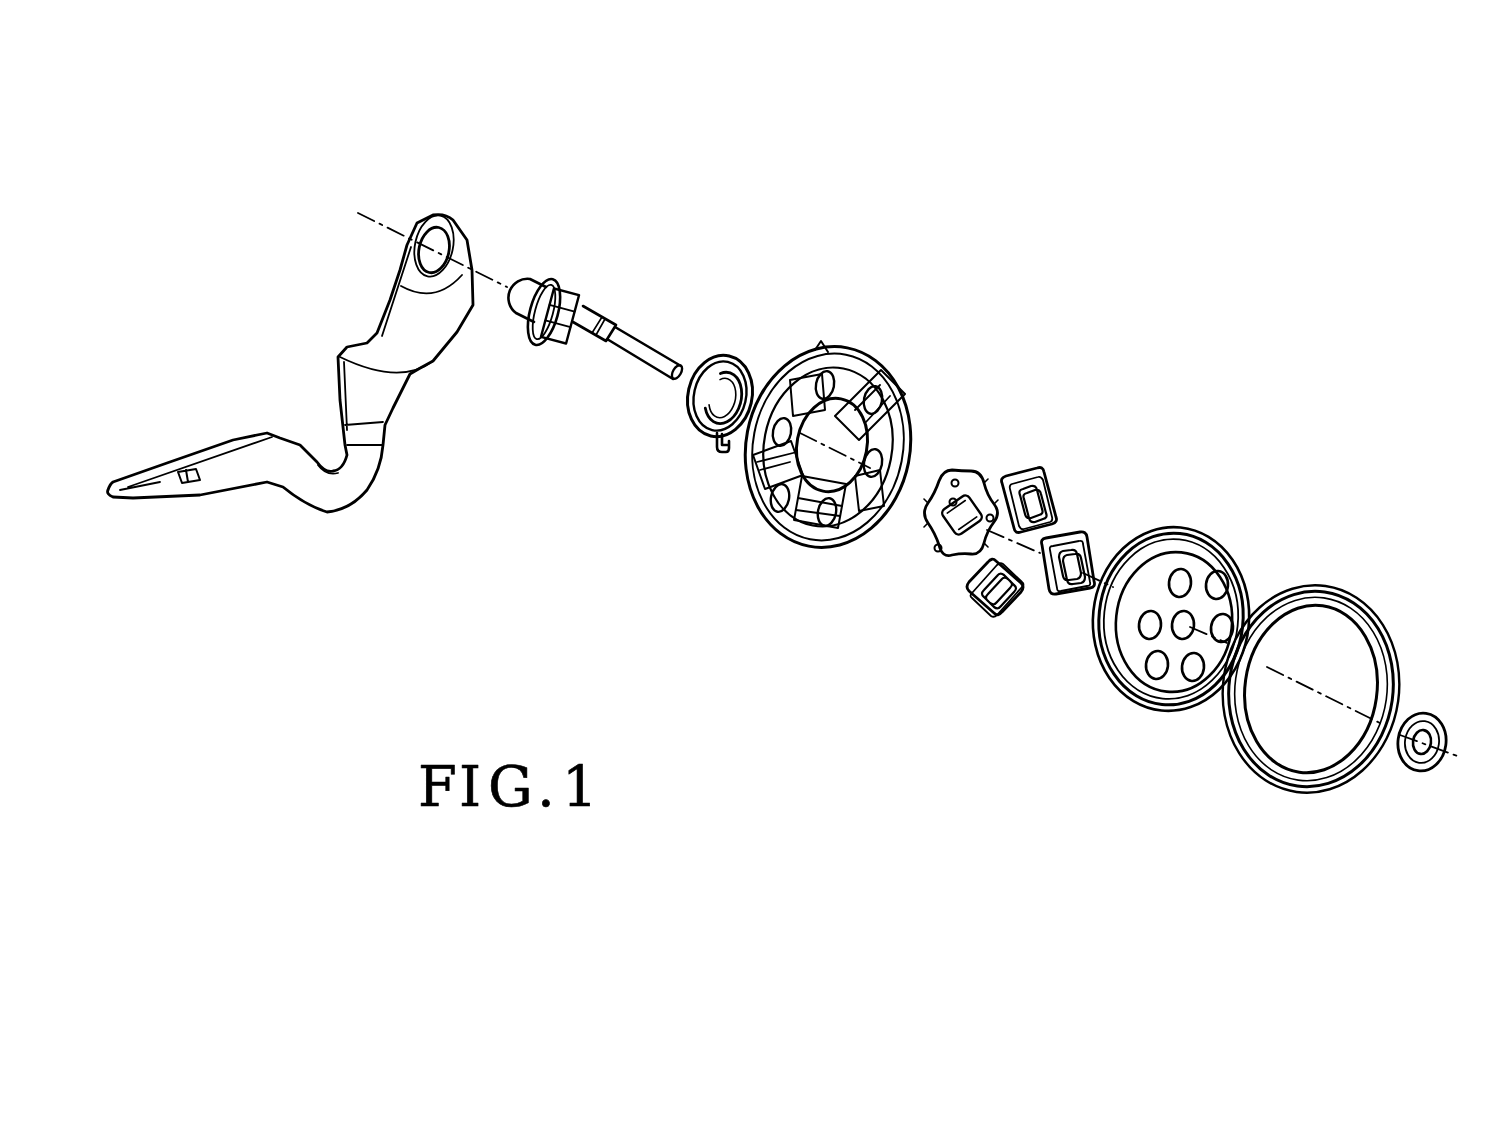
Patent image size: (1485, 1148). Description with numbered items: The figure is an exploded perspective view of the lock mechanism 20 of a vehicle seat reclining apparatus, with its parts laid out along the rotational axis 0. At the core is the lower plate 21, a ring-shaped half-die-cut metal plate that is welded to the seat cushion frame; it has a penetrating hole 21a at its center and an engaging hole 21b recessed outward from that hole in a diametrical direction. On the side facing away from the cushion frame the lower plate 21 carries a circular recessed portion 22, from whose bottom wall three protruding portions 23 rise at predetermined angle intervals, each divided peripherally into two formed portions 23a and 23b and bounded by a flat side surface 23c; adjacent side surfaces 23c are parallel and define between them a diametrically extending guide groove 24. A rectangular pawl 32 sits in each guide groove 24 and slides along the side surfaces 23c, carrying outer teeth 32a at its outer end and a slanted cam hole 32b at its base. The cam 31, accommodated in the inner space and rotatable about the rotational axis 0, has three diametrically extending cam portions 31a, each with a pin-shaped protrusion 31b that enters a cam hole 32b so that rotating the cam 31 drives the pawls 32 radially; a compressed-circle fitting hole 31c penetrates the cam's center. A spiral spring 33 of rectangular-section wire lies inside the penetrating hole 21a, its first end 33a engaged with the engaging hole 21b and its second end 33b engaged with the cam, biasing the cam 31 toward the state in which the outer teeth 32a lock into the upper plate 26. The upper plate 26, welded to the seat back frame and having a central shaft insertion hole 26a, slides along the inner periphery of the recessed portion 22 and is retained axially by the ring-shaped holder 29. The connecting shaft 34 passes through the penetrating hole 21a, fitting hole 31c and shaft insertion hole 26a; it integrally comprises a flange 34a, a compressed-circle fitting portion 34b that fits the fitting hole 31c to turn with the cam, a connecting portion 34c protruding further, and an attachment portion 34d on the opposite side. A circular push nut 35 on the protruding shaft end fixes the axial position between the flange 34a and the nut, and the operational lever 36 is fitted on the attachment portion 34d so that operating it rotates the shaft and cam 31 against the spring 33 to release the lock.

The rotational axis 0 is at (484, 266).
The lock mechanism 20 is at (1066, 311).
The lower plate 21 is at (826, 456).
The penetrating hole 21a is at (760, 522).
The engaging hole 21b is at (862, 520).
The recessed portion 22 is at (870, 445).
The protruding portions 23 is at (826, 467).
The formed portion 23a is at (772, 494).
The formed portion 23b is at (760, 467).
The side surface 23c is at (824, 370).
The guide groove 24 is at (800, 400).
The upper plate 26 is at (1171, 614).
The shaft insertion hole 26a is at (1176, 640).
The holder 29 is at (1342, 590).
The cam 31 is at (956, 539).
The cam portions 31a is at (960, 478).
The protrusion 31b is at (941, 482).
The fitting hole 31c is at (987, 485).
The pawl 32 is at (1057, 563).
The outer teeth 32a is at (1037, 488).
The cam hole 32b is at (1010, 592).
The spring 33 is at (696, 391).
The first end 33a is at (714, 445).
The second end 33b is at (718, 372).
The connecting shaft 34 is at (582, 322).
The flange 34a is at (566, 292).
The fitting portion 34b is at (545, 347).
The connecting portion 34c is at (600, 350).
The attachment portion 34d is at (520, 315).
The push nut 35 is at (1432, 715).
The operational lever 36 is at (397, 325).